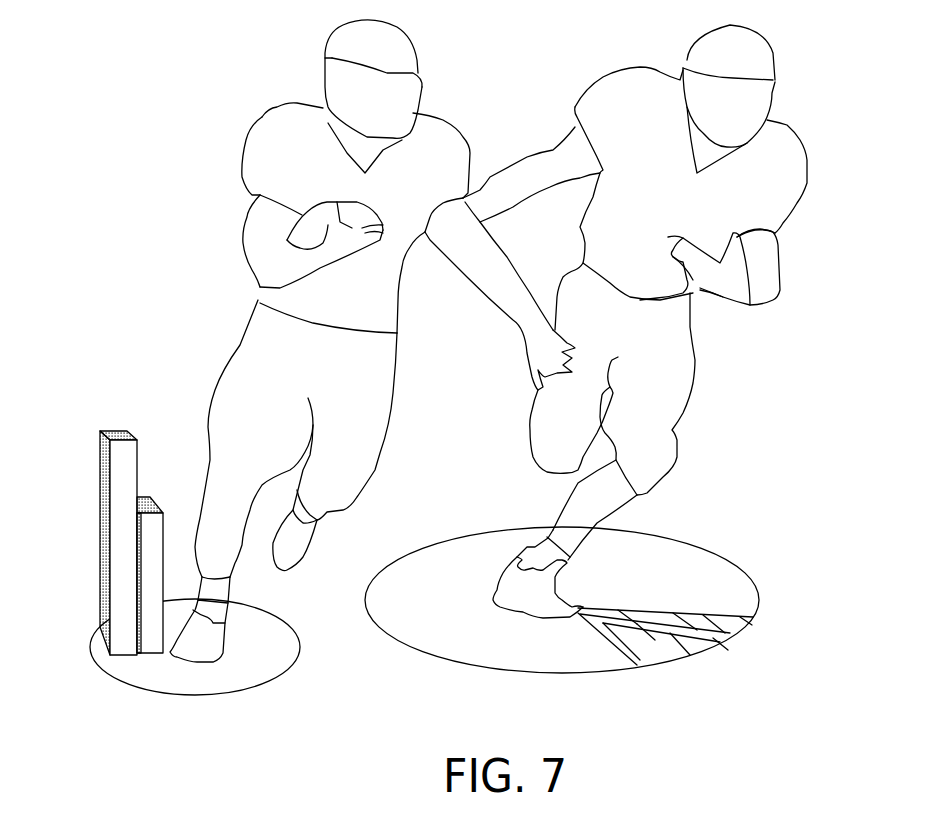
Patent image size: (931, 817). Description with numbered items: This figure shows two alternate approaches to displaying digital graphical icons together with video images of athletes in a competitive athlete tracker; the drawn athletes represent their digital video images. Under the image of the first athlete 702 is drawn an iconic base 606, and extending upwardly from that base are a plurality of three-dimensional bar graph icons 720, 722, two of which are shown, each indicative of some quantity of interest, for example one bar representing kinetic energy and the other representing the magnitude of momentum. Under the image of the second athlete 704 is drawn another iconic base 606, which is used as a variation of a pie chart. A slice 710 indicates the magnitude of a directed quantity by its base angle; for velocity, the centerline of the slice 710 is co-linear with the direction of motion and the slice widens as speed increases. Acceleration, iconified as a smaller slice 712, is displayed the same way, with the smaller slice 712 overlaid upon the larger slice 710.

The first athlete 702 is at (262, 117).
The second athlete 704 is at (792, 127).
The three-dimensional bar graph icon 720 is at (102, 475).
The three-dimensional bar graph icon 722 is at (163, 500).
The iconic base 606 is at (415, 647).
The slice 710 is at (753, 617).
The slice 712 is at (722, 642).